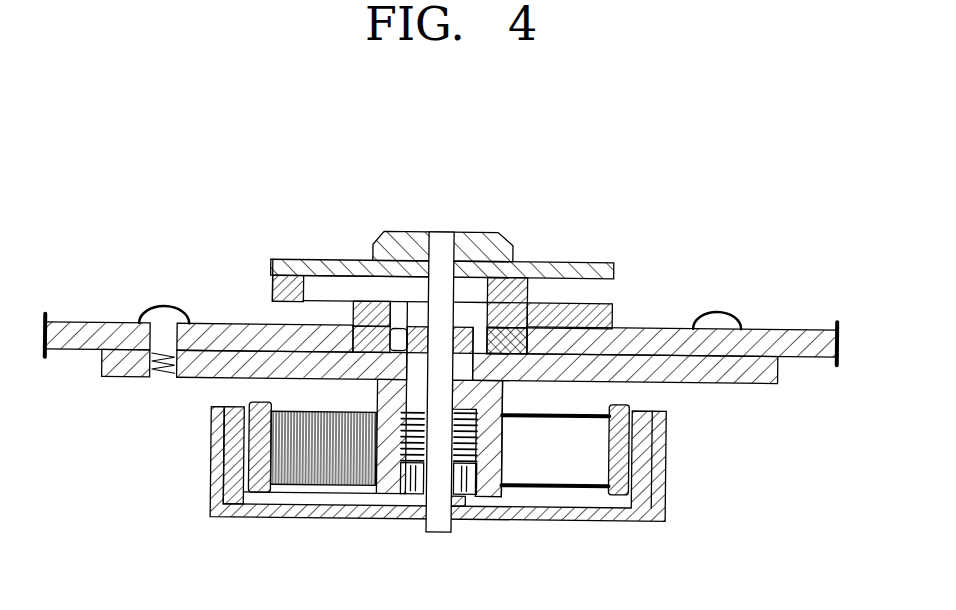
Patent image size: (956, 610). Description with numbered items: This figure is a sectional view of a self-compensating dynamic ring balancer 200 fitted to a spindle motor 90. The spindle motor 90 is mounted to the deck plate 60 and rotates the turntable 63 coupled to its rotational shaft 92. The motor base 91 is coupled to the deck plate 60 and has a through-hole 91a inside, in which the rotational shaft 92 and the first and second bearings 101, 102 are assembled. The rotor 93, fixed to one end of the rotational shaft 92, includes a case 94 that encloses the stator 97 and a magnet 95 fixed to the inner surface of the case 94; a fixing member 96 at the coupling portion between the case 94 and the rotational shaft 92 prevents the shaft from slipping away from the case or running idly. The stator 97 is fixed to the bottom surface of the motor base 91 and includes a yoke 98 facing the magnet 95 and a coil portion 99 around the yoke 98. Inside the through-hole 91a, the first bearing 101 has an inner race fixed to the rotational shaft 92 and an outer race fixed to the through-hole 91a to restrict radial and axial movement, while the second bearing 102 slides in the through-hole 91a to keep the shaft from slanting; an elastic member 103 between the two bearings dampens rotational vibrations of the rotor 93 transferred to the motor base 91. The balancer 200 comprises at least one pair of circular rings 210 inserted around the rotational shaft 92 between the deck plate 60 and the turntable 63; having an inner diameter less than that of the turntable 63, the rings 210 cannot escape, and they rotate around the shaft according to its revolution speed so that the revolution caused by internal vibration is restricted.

The deck plate 60 is at (822, 325).
The motor base 91 is at (777, 372).
The through-hole 91a is at (510, 324).
The rotational shaft 92 is at (442, 250).
The turntable 63 is at (270, 264).
The rings 210 is at (270, 282).
The self-compensating dynamic ring balancer 200 is at (606, 290).
The first bearing 101 is at (412, 350).
The spindle motor 90 is at (491, 445).
The rotor 93 is at (672, 500).
The case 94 is at (659, 507).
The magnet 95 is at (627, 496).
The fixing member 96 is at (456, 506).
The stator 97 is at (296, 496).
The yoke 98 is at (243, 479).
The coil portion 99 is at (338, 489).
The second bearing 102 is at (405, 500).
The elastic member 103 is at (482, 500).